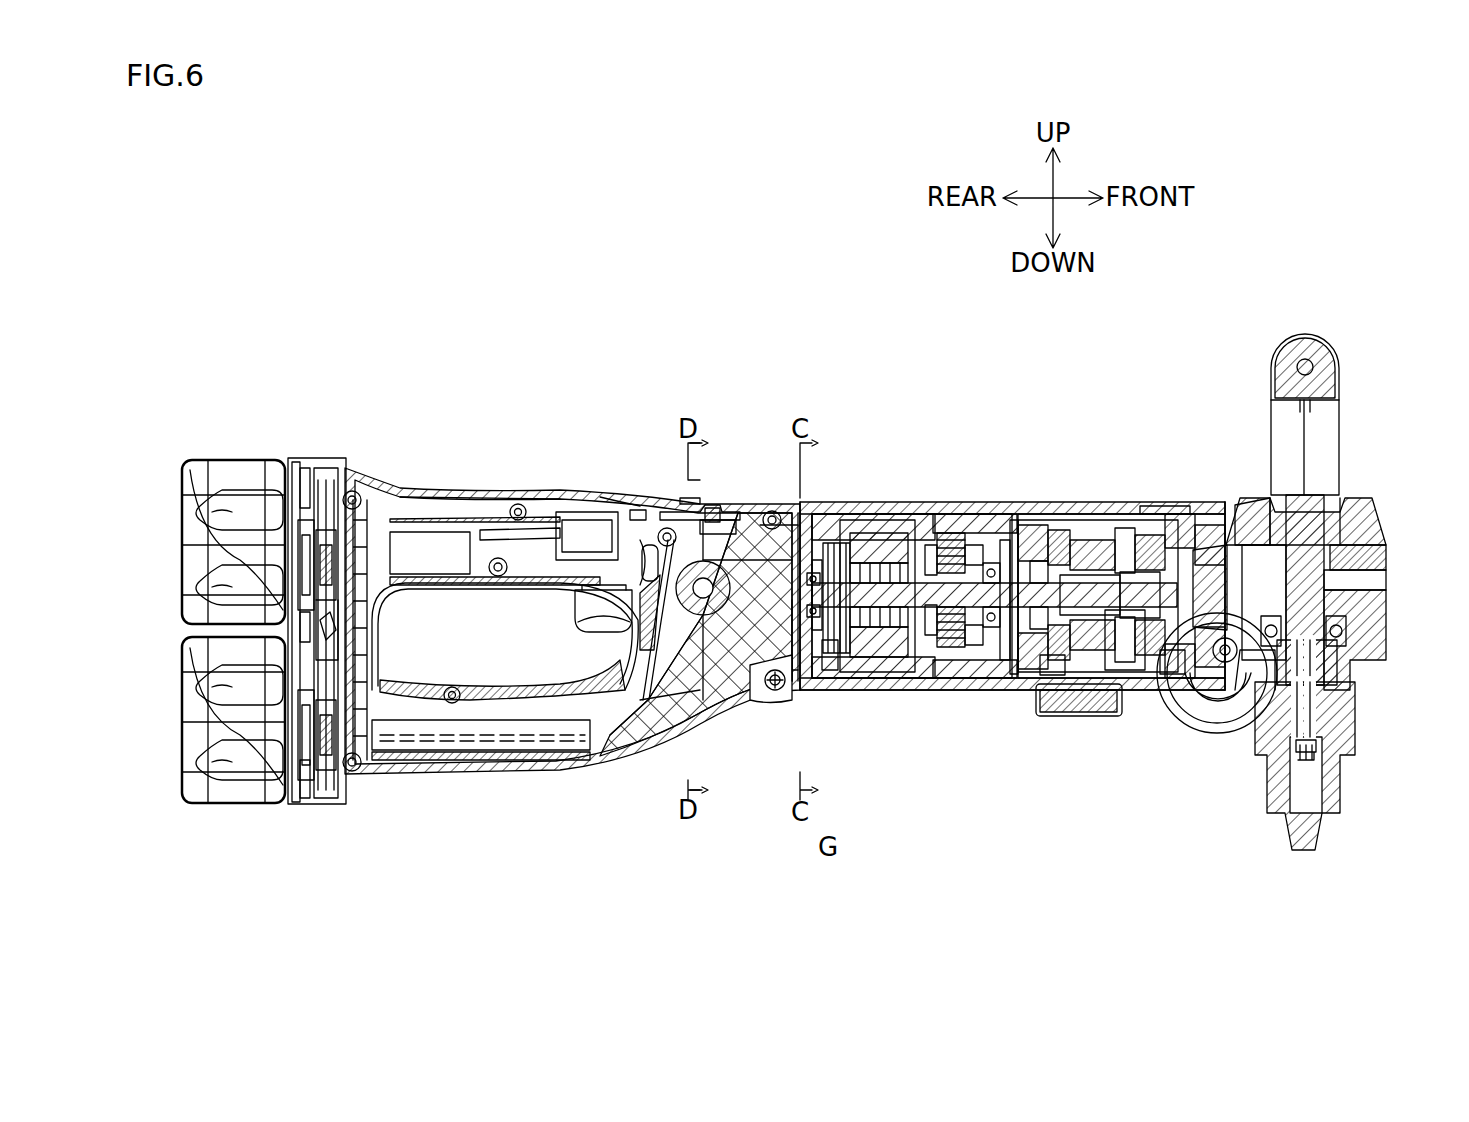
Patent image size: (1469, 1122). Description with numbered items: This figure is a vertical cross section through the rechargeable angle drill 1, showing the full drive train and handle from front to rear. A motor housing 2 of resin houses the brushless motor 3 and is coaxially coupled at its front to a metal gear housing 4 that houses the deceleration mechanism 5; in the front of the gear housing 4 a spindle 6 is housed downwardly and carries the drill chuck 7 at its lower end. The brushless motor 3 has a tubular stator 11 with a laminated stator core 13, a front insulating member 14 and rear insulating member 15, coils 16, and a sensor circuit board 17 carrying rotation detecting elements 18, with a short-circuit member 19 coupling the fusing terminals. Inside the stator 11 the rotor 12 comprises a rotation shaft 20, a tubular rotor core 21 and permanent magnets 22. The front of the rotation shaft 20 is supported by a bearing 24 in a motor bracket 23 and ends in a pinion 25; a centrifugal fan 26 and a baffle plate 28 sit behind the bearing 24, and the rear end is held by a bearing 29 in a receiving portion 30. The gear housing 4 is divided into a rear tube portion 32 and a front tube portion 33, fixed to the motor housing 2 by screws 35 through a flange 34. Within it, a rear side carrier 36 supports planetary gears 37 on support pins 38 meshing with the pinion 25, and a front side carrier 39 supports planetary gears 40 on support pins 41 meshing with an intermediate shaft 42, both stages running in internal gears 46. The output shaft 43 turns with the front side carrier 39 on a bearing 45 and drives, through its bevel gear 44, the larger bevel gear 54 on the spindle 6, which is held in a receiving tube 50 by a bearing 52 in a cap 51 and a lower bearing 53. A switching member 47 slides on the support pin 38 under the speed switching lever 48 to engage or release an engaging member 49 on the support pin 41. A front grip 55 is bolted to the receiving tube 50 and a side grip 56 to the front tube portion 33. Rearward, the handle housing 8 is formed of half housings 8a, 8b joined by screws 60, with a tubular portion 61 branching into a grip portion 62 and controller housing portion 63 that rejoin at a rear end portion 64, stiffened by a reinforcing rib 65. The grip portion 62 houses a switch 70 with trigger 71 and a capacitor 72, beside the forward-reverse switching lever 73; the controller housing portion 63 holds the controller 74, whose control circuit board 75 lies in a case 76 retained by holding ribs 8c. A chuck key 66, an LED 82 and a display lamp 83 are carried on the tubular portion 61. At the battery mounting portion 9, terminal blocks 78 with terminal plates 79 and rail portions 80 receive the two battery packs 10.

The rechargeable angle drill 1 is at (872, 345).
The motor housing 2 is at (850, 500).
The brushless motor 3 is at (900, 690).
The gear housing 4 is at (1193, 496).
The deceleration mechanism 5 is at (1090, 520).
The spindle 6 is at (1318, 598).
The drill chuck 7 is at (1346, 710).
The handle housing 8 is at (546, 490).
The half housing 8a is at (433, 495).
The half housing 8b is at (715, 730).
The holding rib 8c is at (386, 775).
The battery mounting portion 9 is at (327, 462).
The battery pack 10 is at (220, 472).
The stator 11 is at (886, 520).
The rotor 12 is at (914, 520).
The stator core 13 is at (878, 535).
The front insulating member 14 is at (906, 565).
The rear insulating member 15 is at (840, 610).
The coil 16 is at (815, 572).
The sensor circuit board 17 is at (818, 632).
The rotation detecting element 18 is at (796, 514).
The short-circuit member 19 is at (800, 690).
The rotation shaft 20 is at (948, 530).
The rotor core 21 is at (834, 660).
The permanent magnet 22 is at (840, 540).
The motor bracket 23 is at (934, 545).
The bearing 24 is at (990, 518).
The pinion 25 is at (1014, 672).
The centrifugal fan 26 is at (1003, 660).
The baffle plate 28 is at (972, 545).
The bearing 29 is at (722, 522).
The receiving portion 30 is at (764, 700).
The rear tube portion 32 is at (1088, 540).
The front tube portion 33 is at (1205, 525).
The flange 34 is at (1160, 510).
The screw 35 is at (1148, 535).
The rear side carrier 36 is at (1058, 530).
The planetary gear 37 is at (1028, 525).
The support pin 38 is at (1038, 560).
The front side carrier 39 is at (1180, 748).
The planetary gear 40 is at (1143, 562).
The support pin 41 is at (1176, 518).
The intermediate shaft 42 is at (1125, 672).
The output shaft 43 is at (1222, 548).
The bevel gear 44 is at (1254, 548).
The bearing 45 is at (1224, 662).
The internal gear 46 is at (1050, 676).
The switching member 47 is at (1095, 575).
The speed switching lever 48 is at (1075, 714).
The engaging member 49 is at (1124, 528).
The receiving tube 50 is at (1388, 610).
The cap 51 is at (1380, 545).
The bearing 52 is at (1342, 510).
The bearing 53 is at (1348, 631).
The bevel gear 54 is at (1384, 576).
The front grip 55 is at (1305, 358).
The side grip 56 is at (1243, 710).
The screw 60 is at (760, 700).
The tubular portion 61 is at (676, 510).
The grip portion 62 is at (474, 515).
The controller housing portion 63 is at (490, 752).
The rear end portion 64 is at (360, 500).
The reinforcing rib 65 is at (366, 768).
The chuck key 66 is at (650, 540).
The switch 70 is at (596, 520).
The trigger 71 is at (572, 625).
The capacitor 72 is at (416, 535).
The forward-reverse switching lever 73 is at (644, 500).
The controller 74 is at (476, 720).
The control circuit board 75 is at (520, 735).
The case 76 is at (556, 762).
The terminal block 78 is at (326, 480).
The terminal plate 79 is at (305, 520).
The rail portion 80 is at (294, 478).
The LED 82 is at (718, 760).
The display lamp 83 is at (714, 505).